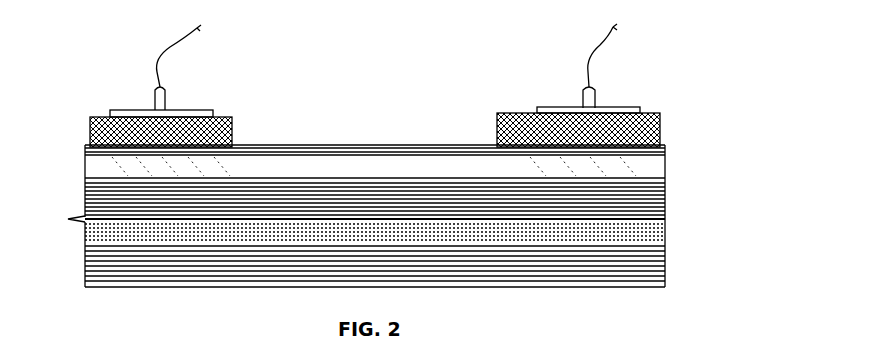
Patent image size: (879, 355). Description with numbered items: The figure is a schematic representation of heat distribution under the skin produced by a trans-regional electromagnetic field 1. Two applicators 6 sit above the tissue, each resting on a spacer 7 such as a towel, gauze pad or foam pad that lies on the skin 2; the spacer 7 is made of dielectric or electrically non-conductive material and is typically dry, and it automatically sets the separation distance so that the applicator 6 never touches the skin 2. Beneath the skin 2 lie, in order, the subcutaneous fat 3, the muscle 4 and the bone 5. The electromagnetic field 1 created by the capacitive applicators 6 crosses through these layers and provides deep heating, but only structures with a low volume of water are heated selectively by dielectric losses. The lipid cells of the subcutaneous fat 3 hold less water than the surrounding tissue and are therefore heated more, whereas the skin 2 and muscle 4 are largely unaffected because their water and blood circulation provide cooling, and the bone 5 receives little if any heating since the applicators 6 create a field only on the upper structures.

The electromagnetic field 1 is at (250, 158).
The skin 2 is at (665, 143).
The subcutaneous fat 3 is at (667, 171).
The muscle 4 is at (667, 201).
The bone 5 is at (667, 234).
The applicator 6 is at (195, 108).
The spacer 7 is at (232, 128).